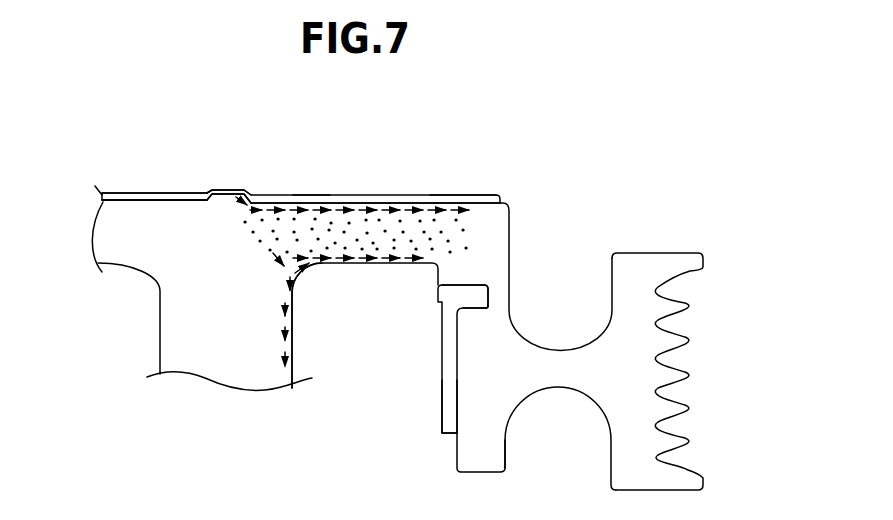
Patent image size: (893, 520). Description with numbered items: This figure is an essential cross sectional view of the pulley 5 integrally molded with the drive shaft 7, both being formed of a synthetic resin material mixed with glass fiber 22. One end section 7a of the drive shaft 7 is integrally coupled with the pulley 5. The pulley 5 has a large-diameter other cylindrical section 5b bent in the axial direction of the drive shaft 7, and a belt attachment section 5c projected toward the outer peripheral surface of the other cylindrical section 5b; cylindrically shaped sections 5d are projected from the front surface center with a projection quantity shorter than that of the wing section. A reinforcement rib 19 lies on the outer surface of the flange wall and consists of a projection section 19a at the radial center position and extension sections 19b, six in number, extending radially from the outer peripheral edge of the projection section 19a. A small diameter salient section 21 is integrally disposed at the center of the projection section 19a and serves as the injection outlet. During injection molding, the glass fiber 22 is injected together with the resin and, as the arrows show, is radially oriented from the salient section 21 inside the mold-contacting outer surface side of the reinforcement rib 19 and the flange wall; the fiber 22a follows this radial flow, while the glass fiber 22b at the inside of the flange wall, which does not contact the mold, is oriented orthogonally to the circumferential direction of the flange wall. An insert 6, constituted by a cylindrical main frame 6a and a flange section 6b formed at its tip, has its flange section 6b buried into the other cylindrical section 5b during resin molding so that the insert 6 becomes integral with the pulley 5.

The pulley 5 is at (508, 173).
The other cylindrical section 5b is at (493, 382).
The belt attachment section 5c is at (668, 403).
The cylindrically shaped section 5d is at (387, 203).
The insert 6 is at (428, 372).
The main frame 6a is at (442, 413).
The flange section 6b is at (470, 295).
The drive shaft 7 is at (186, 391).
The one end section 7a is at (210, 264).
The reinforcement rib 19 is at (267, 184).
The projection section 19a is at (142, 193).
The extension section 19b is at (435, 196).
The small diameter salient section 21 is at (235, 187).
The glass fiber 22 is at (266, 254).
The upper air passage 22a is at (348, 212).
The glass fiber 22b is at (361, 237).